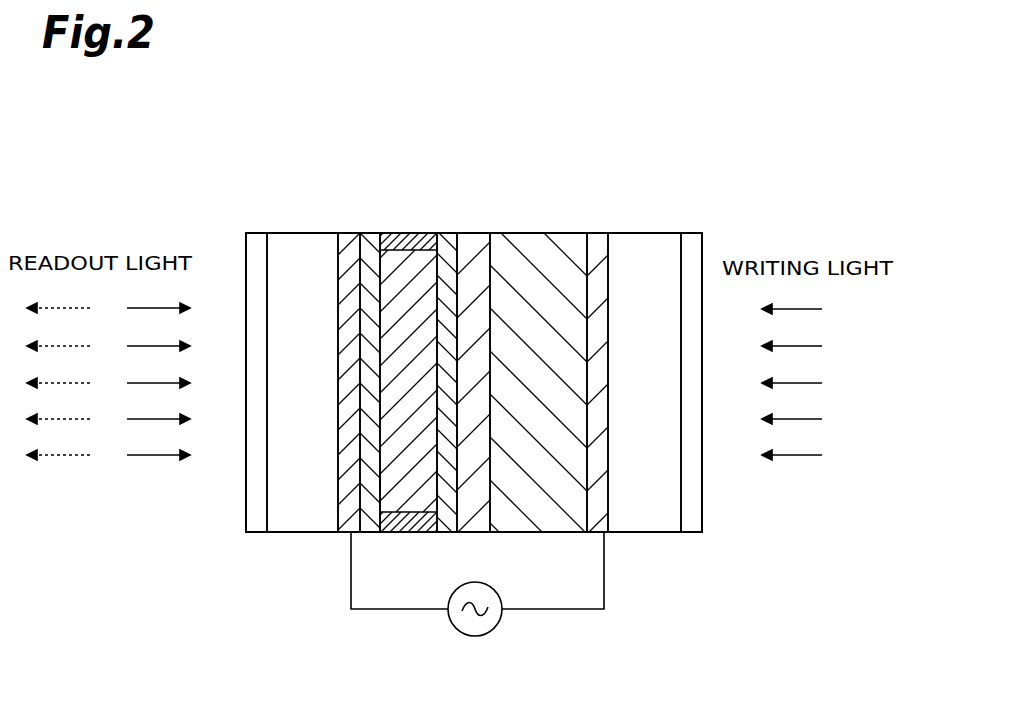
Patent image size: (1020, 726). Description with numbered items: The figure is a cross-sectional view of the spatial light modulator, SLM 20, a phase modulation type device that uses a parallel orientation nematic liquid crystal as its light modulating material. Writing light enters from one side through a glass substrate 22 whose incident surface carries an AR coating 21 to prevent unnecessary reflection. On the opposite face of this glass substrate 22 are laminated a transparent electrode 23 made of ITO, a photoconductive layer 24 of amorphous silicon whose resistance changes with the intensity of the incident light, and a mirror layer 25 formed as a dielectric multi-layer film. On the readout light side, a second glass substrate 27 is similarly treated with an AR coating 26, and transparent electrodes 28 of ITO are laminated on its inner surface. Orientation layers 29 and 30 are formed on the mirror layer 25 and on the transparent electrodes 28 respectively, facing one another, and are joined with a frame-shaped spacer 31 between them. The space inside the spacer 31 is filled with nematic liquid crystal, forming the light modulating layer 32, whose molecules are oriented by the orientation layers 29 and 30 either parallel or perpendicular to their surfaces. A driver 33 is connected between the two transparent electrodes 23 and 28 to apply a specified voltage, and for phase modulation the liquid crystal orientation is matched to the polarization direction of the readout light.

The SLM 20 is at (658, 612).
The AR coating 21 is at (690, 232).
The glass substrate 22 is at (645, 232).
The transparent electrode 23 is at (598, 232).
The photoconductive layer 24 is at (537, 232).
The mirror layer 25 is at (473, 232).
The AR coating 26 is at (249, 232).
The glass substrate 27 is at (300, 232).
The transparent electrodes 28 is at (351, 232).
The orientation layer 29 is at (447, 232).
The orientation layer 30 is at (373, 232).
The spacer 31 is at (410, 232).
The light modulating layer 32 is at (388, 474).
The driver 33 is at (452, 632).